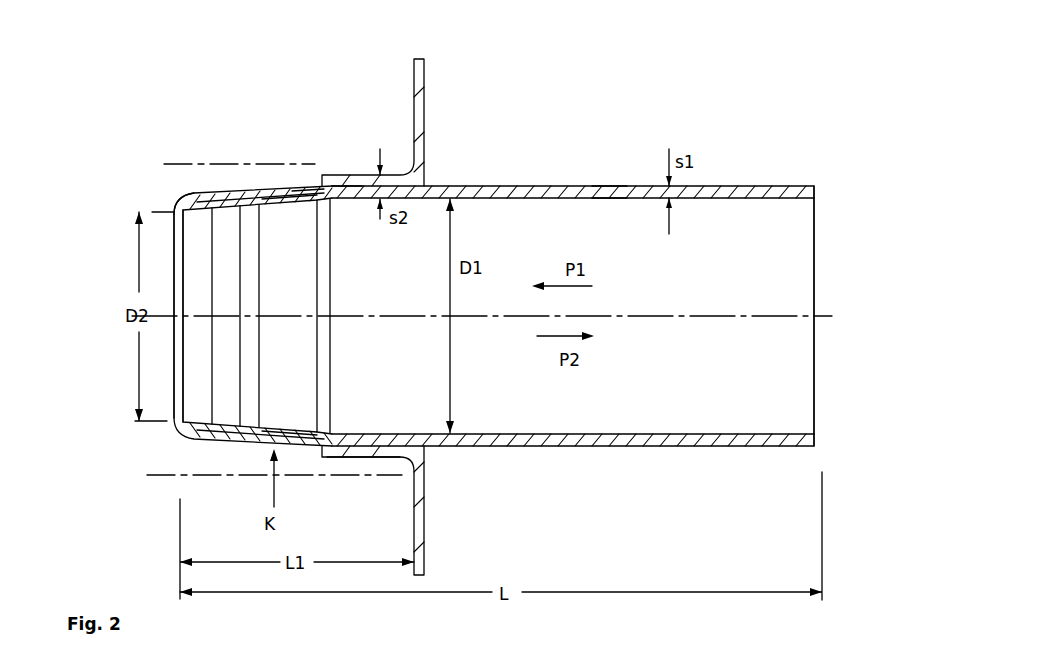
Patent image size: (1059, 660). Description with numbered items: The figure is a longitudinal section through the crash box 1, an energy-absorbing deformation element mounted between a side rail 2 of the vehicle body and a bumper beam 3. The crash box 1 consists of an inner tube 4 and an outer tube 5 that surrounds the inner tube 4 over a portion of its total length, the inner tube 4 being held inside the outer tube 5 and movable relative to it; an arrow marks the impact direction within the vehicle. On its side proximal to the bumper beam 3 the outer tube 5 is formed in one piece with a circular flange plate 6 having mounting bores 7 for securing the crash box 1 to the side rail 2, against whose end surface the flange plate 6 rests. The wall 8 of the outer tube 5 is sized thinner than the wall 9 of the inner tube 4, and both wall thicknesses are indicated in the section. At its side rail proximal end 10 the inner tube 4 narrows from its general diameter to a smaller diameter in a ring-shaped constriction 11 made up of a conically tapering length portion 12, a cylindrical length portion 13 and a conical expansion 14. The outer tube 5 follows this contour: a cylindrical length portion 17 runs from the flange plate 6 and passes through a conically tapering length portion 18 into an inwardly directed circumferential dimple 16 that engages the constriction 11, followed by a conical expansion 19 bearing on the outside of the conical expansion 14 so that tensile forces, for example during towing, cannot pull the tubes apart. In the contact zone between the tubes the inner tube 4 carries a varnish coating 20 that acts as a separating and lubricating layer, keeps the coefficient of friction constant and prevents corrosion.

The crash box 1 is at (618, 70).
The side rail 2 is at (265, 152).
The bumper beam 3 is at (812, 458).
The inner tube 4 is at (603, 178).
The outer tube 5 is at (318, 457).
The flange plate 6 is at (426, 553).
The mounting bores 7 is at (426, 118).
The wall of the outer tube 8 is at (365, 455).
The wall of the inner tube 9 is at (512, 185).
The side rail proximal end 10 is at (165, 115).
The constriction 11 is at (226, 200).
The conically tapering length portion 12 is at (290, 185).
The cylindrical length portion 13 is at (228, 430).
The conical expansion 14 is at (172, 196).
The circumferential dimple 16 is at (239, 184).
The cylindrical length portion 17 is at (350, 177).
The conically tapering length portion 18 is at (308, 187).
The conical expansion 19 is at (183, 185).
The coating 20 is at (291, 430).